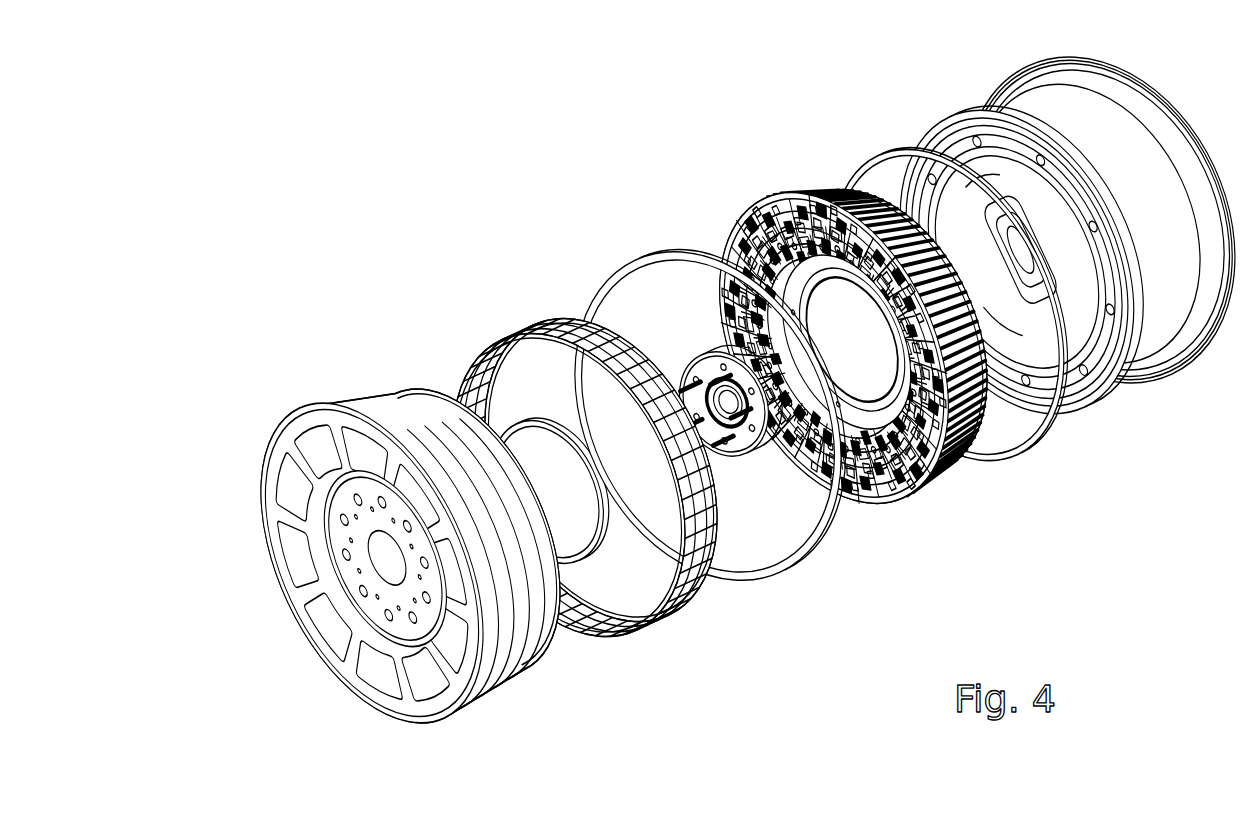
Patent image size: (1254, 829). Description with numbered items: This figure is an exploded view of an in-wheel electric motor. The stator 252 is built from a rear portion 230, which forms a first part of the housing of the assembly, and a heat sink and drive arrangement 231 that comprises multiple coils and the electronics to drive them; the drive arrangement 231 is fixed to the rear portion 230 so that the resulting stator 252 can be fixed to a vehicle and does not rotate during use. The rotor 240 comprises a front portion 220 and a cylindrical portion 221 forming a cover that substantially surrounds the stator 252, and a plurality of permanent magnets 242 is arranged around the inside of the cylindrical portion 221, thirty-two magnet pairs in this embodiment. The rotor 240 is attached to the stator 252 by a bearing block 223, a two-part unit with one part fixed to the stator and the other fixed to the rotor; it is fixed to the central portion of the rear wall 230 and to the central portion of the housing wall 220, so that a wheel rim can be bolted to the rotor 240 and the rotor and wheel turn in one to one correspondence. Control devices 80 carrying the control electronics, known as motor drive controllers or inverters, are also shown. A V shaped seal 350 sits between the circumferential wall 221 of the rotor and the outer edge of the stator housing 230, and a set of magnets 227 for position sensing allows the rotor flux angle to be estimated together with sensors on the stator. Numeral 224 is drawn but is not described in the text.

The control devices 80 is at (928, 480).
The front portion 220 is at (410, 547).
The cylindrical portion 221 is at (518, 697).
The bearing block 223 is at (745, 462).
The hub mounting portion 224 is at (400, 627).
The magnets for position sensing 227 is at (597, 553).
The rear portion 230 is at (950, 113).
The heat sink and drive arrangement 231 is at (768, 213).
The rotor 240 is at (555, 483).
The permanent magnets 242 is at (543, 318).
The stator 252 is at (1203, 394).
The V shaped seal 350 is at (862, 158).